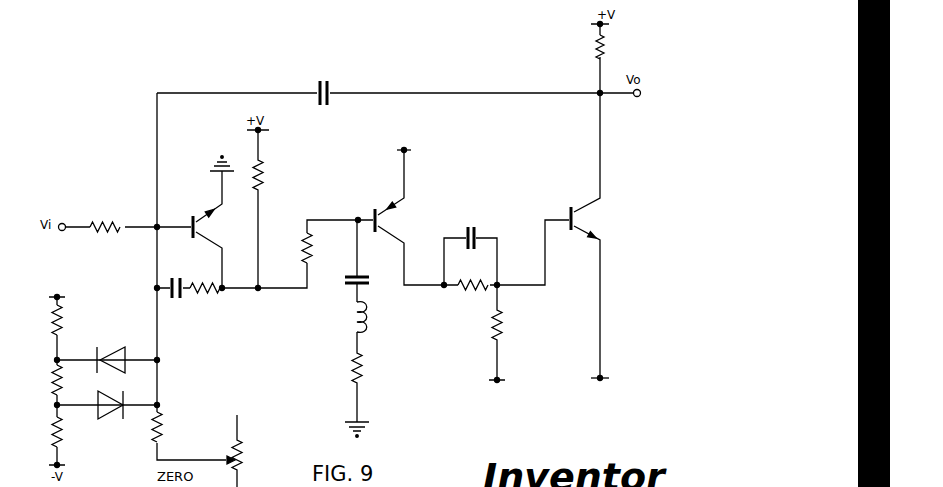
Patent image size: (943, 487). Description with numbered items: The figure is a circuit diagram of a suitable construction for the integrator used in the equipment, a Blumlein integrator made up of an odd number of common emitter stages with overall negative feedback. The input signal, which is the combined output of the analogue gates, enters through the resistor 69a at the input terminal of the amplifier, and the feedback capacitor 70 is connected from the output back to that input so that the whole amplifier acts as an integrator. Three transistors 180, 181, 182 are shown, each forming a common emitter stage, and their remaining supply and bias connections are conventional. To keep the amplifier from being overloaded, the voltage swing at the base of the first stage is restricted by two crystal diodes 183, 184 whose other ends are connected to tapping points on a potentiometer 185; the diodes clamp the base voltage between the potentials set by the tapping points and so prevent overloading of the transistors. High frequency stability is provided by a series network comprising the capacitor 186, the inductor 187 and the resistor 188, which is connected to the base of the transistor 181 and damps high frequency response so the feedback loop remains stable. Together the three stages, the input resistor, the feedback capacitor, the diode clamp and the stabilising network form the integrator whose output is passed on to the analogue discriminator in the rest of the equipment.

The capacitor 70 is at (330, 82).
The resistor 69a is at (108, 214).
The transistor 180 is at (199, 226).
The transistor 181 is at (382, 218).
The transistor 182 is at (575, 215).
The crystal diode 183 is at (110, 346).
The crystal diode 184 is at (105, 409).
The potentiometer 185 is at (67, 318).
The capacitor 186 is at (371, 284).
The inductor 187 is at (366, 318).
The resistor 188 is at (363, 368).